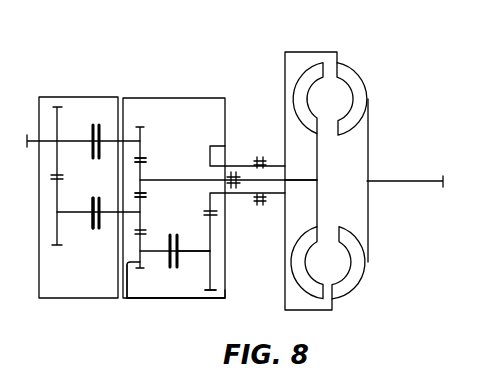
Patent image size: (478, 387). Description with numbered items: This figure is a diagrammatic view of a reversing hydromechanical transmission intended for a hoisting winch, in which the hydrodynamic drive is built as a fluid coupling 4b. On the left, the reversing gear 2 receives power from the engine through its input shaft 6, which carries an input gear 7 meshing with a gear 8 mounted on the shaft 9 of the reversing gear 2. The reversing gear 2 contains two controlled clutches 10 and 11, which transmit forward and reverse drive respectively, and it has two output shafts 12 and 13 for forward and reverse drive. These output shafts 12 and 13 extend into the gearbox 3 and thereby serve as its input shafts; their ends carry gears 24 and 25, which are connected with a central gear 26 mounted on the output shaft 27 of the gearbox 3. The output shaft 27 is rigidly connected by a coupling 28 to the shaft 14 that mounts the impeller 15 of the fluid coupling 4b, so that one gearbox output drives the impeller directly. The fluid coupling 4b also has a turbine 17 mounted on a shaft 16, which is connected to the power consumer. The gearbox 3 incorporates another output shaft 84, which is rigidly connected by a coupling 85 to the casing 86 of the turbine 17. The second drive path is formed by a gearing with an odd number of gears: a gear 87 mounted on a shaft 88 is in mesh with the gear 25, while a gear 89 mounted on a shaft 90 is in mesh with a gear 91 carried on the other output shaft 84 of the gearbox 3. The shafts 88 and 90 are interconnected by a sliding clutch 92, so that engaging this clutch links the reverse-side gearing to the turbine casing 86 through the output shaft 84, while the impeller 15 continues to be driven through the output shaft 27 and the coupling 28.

The reversing gear 2 is at (63, 98).
The gearbox 3 is at (153, 298).
The fluid coupling 4b is at (362, 77).
The input shaft 6 is at (33, 137).
The input gear 7 is at (55, 112).
The gear 8 is at (55, 197).
The shaft 9 is at (78, 214).
The controlled clutch 10 is at (92, 125).
The controlled clutch 11 is at (93, 233).
The output shaft 12 is at (113, 137).
The output shaft 13 is at (107, 216).
The shaft 14 is at (297, 178).
The impeller 15 is at (310, 70).
The shaft 16 is at (414, 180).
The turbine 17 is at (357, 99).
The gear 24 is at (145, 128).
The gear 25 is at (142, 210).
The central gear 26 is at (142, 176).
The output shaft 27 is at (185, 178).
The coupling 28 is at (233, 171).
The output shaft 84 is at (244, 196).
The coupling 85 is at (262, 206).
The casing 86 is at (262, 157).
The gear 87 is at (127, 297).
The shaft 88 is at (152, 254).
The gear 89 is at (214, 300).
The shaft 90 is at (209, 289).
The gear 91 is at (211, 147).
The sliding clutch 92 is at (173, 270).